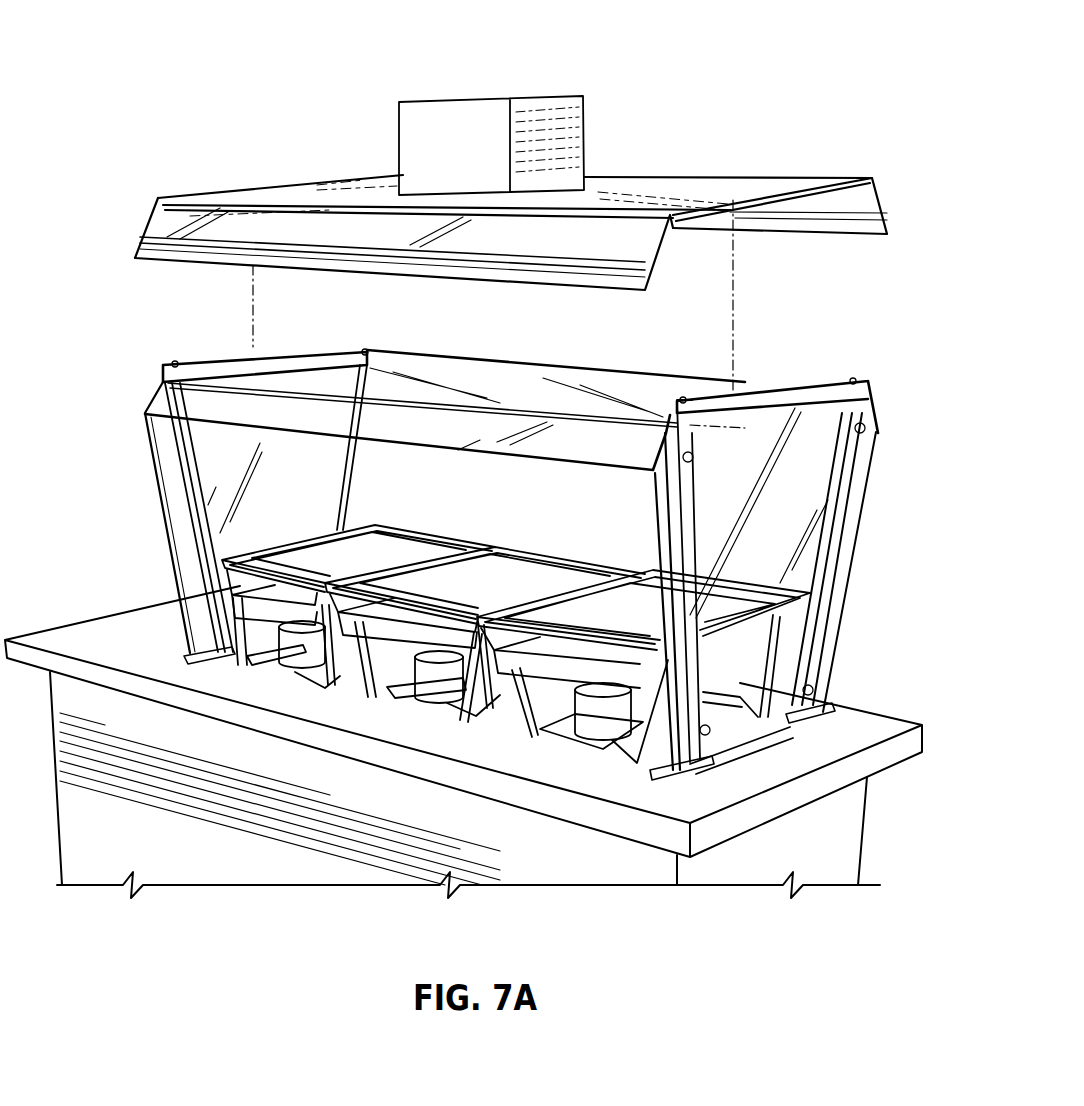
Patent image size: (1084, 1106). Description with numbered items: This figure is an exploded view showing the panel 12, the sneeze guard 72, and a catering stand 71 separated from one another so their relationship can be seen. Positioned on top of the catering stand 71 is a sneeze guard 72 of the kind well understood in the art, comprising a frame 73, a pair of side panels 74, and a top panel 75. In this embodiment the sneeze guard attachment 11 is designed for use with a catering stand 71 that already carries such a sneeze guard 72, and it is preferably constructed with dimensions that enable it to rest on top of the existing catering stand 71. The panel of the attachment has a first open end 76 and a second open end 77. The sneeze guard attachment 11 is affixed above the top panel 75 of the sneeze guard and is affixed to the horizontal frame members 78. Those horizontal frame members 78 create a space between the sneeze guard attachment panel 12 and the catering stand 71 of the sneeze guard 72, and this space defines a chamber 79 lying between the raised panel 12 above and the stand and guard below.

The sneeze guard attachment 11 is at (841, 149).
The panel 12 is at (272, 190).
The catering stand 71 is at (135, 546).
The sneeze guard 72 is at (890, 397).
The frame 73 is at (840, 543).
The side panels 74 is at (151, 460).
The top panel 75 is at (497, 369).
The first open end 76 is at (413, 272).
The second open end 77 is at (763, 234).
The horizontal frame members 78 is at (205, 362).
The chamber 79 is at (683, 222).